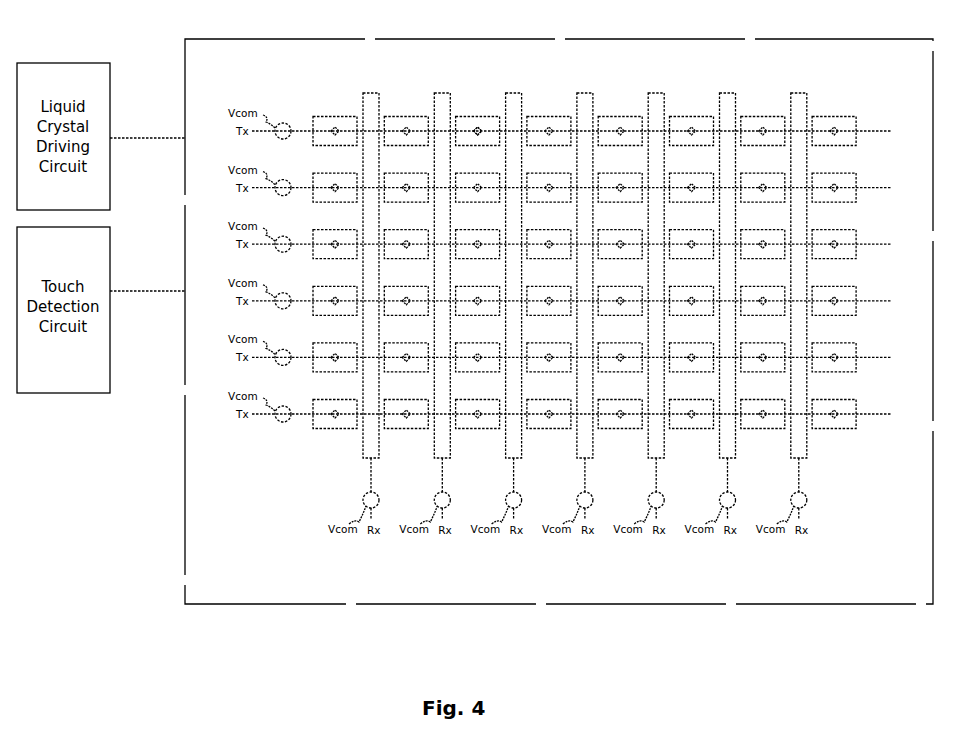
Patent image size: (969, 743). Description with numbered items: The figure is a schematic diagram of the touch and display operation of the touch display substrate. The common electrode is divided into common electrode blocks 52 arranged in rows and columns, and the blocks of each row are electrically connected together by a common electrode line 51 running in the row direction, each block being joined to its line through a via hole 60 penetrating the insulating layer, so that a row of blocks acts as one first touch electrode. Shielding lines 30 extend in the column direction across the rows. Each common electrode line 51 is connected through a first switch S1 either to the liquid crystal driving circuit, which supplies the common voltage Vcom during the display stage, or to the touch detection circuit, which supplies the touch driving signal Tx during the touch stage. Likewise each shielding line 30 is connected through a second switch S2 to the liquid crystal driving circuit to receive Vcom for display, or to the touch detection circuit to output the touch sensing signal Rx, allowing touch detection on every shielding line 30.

The common electrode line 51 is at (308, 129).
The common electrode block 52 is at (340, 116).
The via hole 60 is at (478, 130).
The shielding line 30 is at (364, 430).
The first switch S1 is at (284, 424).
The second switch S2 is at (364, 504).